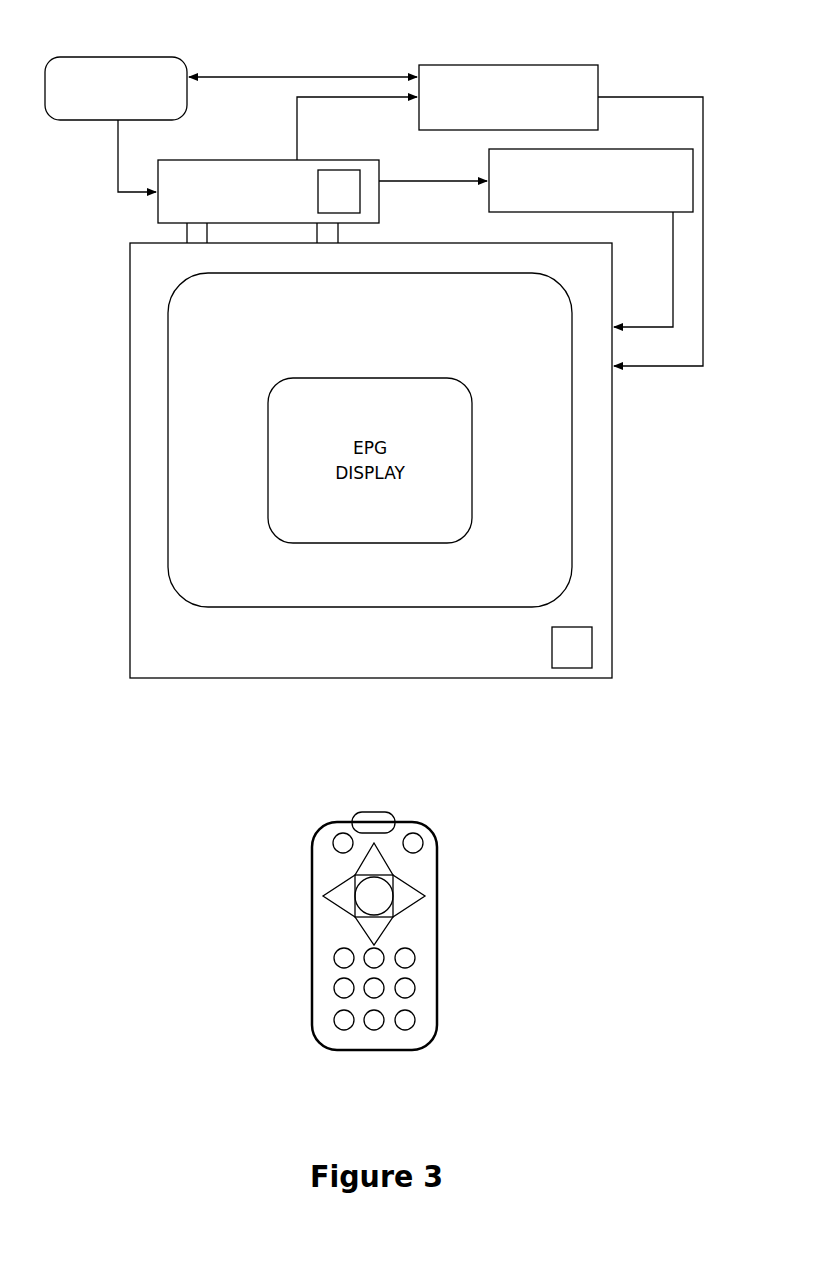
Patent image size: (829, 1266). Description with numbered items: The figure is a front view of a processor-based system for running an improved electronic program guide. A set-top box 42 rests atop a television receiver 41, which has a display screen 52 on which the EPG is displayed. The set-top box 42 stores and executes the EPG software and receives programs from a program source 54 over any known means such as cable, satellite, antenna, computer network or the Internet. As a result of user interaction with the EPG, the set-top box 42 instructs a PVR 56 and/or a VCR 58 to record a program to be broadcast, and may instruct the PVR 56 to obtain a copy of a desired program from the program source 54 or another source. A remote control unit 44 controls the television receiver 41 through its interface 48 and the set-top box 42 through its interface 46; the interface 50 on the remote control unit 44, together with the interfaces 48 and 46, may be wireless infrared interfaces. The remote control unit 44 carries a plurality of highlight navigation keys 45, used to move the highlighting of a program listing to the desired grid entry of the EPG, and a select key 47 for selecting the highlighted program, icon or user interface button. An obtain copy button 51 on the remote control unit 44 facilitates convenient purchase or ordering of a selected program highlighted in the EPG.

The television receiver 41 is at (192, 680).
The set-top box 42 is at (217, 159).
The remote control unit 44 is at (437, 868).
The highlight navigation keys 45 is at (413, 905).
The interface 46 is at (317, 183).
The select key 47 is at (373, 896).
The interface 48 is at (573, 623).
The interface 50 is at (380, 812).
The obtain copy button 51 is at (333, 840).
The display screen 52 is at (228, 608).
The program source 54 is at (158, 54).
The PVR 56 is at (490, 64).
The VCR 58 is at (630, 148).